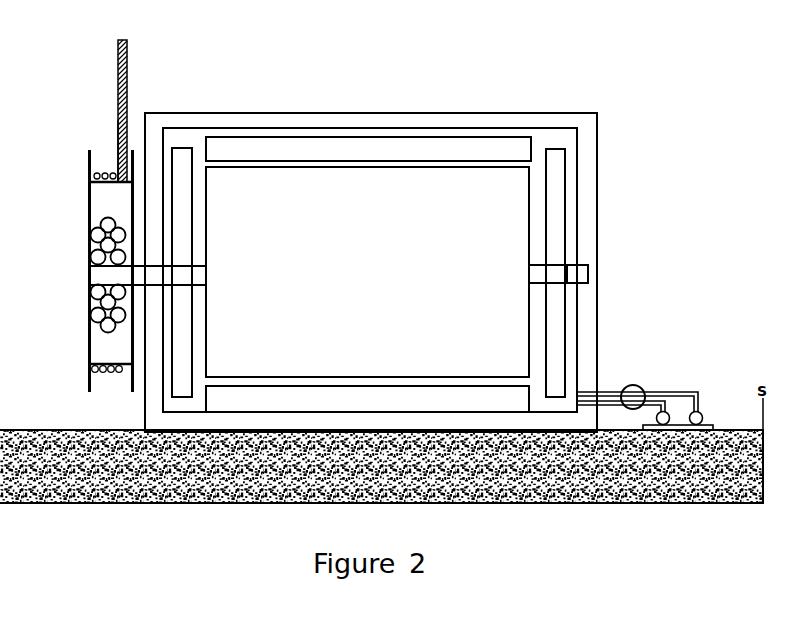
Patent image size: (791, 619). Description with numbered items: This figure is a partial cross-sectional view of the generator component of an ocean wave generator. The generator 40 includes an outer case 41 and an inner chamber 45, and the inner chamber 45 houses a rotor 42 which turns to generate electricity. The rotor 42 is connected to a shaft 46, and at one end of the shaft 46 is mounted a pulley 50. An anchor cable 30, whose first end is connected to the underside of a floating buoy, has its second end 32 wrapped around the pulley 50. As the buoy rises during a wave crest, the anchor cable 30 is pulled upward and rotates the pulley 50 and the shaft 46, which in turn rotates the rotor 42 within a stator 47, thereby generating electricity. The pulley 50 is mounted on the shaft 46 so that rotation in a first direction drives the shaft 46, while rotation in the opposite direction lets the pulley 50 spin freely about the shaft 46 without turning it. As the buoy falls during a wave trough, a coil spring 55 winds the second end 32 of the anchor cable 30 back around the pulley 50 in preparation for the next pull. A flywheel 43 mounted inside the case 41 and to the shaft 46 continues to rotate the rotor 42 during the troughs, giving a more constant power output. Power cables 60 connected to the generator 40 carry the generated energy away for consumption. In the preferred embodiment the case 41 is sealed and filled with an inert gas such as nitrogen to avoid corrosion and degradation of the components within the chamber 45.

The anchor cable 30 is at (132, 58).
The second end 32 is at (118, 137).
The generator 40 is at (462, 111).
The outer case 41 is at (598, 164).
The rotor 42 is at (347, 235).
The flywheel 43 is at (180, 157).
The inner chamber 45 is at (557, 139).
The shaft 46 is at (586, 272).
The stator 47 is at (392, 147).
The pulley 50 is at (88, 352).
The coil spring 55 is at (97, 316).
The power cables 60 is at (636, 386).